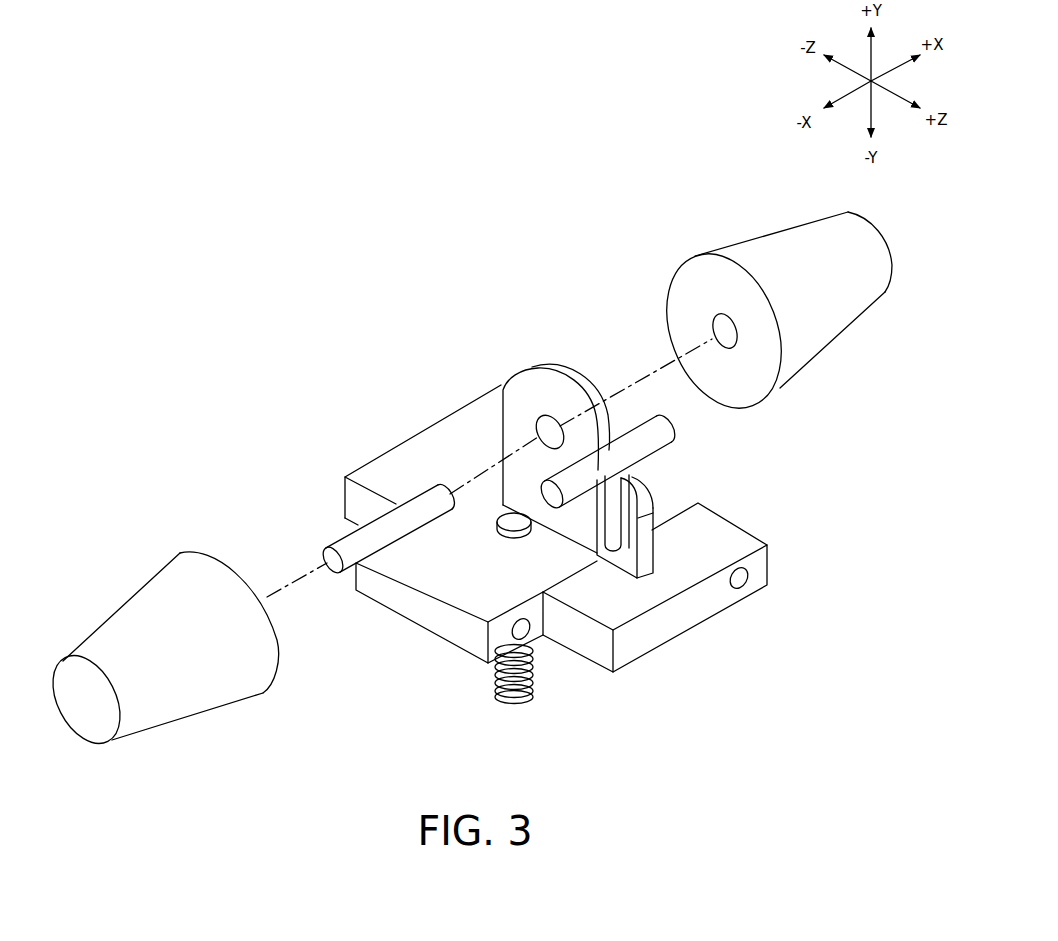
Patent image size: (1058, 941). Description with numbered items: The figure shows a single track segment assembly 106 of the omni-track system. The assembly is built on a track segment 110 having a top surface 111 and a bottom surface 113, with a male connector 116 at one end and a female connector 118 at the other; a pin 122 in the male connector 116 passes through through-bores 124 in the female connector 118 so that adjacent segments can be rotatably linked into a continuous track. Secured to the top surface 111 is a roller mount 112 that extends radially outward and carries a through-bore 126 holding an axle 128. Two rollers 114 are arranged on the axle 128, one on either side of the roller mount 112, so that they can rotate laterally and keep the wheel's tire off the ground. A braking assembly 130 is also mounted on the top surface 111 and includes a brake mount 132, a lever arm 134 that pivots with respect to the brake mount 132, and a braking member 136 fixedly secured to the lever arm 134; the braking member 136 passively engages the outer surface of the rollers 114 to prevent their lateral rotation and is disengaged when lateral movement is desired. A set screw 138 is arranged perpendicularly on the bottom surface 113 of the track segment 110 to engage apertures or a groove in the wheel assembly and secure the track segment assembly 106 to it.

The track segment assembly 106 is at (350, 245).
The track segment 110 is at (427, 415).
The top surface 111 is at (462, 590).
The roller mount 112 is at (558, 368).
The bottom surface 113 is at (668, 642).
The roller 114 is at (123, 597).
The male connector 116 is at (470, 655).
The female connector 118 is at (757, 542).
The pin 122 is at (528, 620).
The through-bore 124 is at (742, 588).
The through-bore 126 is at (537, 421).
The axle 128 is at (334, 540).
The braking assembly 130 is at (662, 506).
The brake mount 132 is at (645, 557).
The lever arm 134 is at (610, 530).
The braking member 136 is at (675, 435).
The set screw 138 is at (535, 682).